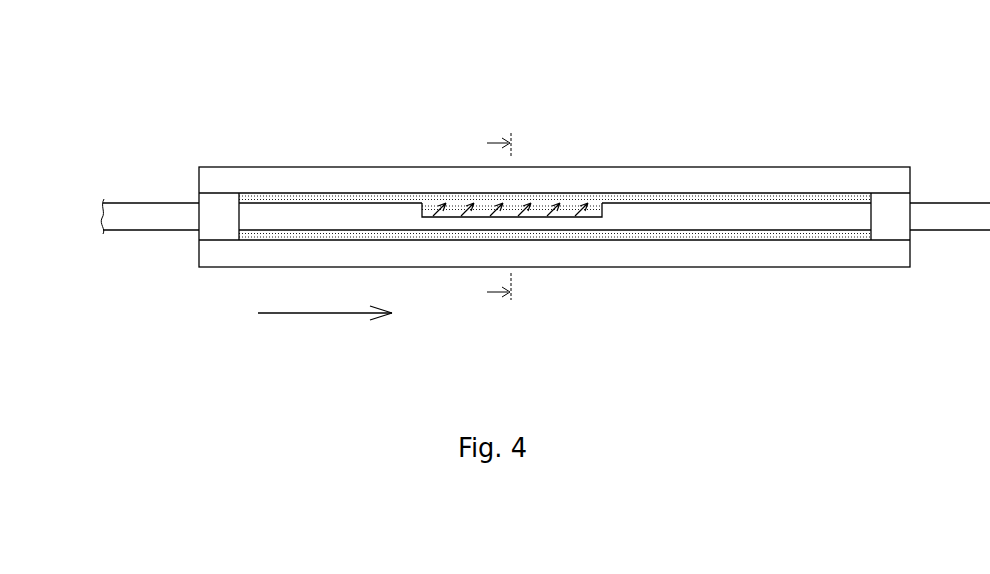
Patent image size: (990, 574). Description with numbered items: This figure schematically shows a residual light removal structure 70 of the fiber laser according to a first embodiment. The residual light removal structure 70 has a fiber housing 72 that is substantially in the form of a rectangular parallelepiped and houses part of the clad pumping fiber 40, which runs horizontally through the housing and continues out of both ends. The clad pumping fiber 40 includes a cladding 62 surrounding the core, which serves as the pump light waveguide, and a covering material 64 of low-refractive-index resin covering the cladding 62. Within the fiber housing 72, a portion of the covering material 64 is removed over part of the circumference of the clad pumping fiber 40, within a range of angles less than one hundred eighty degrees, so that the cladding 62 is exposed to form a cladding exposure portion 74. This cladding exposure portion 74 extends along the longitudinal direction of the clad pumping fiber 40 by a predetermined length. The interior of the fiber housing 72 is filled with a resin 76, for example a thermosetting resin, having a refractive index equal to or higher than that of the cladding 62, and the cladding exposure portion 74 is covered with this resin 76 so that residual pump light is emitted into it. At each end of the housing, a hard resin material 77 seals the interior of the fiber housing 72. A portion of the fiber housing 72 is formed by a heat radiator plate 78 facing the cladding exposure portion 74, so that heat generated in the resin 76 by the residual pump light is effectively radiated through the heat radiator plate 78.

The clad pumping fiber 40 is at (135, 188).
The cladding 62 is at (455, 211).
The covering material 64 is at (288, 210).
The residual light removal structure 70 is at (902, 119).
The fiber housing 72 is at (755, 160).
The cladding exposure portion 74 is at (544, 206).
The resin 76 is at (331, 199).
The hard resin material 77 is at (222, 229).
The heat radiator plate 78 is at (631, 170).